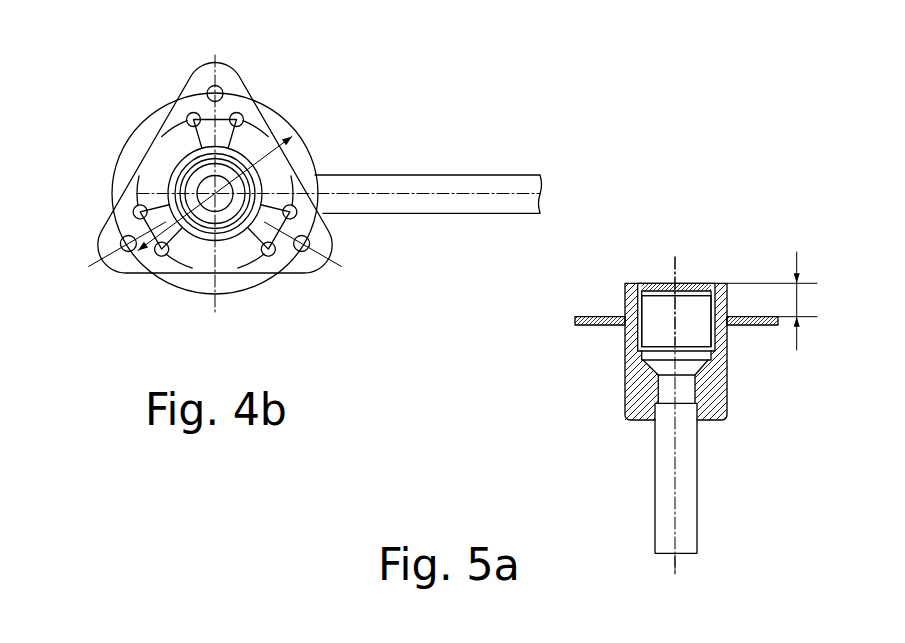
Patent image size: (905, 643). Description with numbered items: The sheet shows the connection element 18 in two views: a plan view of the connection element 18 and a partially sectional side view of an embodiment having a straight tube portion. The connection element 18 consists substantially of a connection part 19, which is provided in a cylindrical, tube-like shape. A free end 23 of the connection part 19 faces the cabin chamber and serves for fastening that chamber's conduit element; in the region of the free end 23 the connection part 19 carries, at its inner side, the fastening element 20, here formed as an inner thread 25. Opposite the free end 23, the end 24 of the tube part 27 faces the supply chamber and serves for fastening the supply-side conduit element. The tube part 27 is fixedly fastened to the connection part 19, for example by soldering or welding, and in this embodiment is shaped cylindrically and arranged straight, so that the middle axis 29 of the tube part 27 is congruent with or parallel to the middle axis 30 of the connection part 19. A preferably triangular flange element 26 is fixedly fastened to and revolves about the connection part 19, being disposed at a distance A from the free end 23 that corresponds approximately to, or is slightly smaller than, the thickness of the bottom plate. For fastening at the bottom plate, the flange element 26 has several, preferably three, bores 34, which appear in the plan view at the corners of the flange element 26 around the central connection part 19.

In FIG. 4B, the connection element 18 is at (352, 113).
In FIG. 5A, the connection element 18 is at (585, 436).
In FIG. 5A, the connection part 19 is at (637, 387).
In FIG. 5A, the fastening element 20 is at (648, 312).
In FIG. 5A, the free end 23 is at (669, 258).
In FIG. 5A, the end 24 is at (679, 580).
In FIG. 5A, the inner thread 25 is at (703, 317).
In FIG. 4B, the flange element 26 is at (162, 158).
In FIG. 5A, the flange element 26 is at (583, 317).
In FIG. 4B, the tube part 27 is at (473, 203).
In FIG. 5A, the tube part 27 is at (687, 502).
In FIG. 5A, the middle axis 29 is at (677, 447).
In FIG. 5A, the middle axis 30 is at (675, 335).
In FIG. 4B, the bores 34 is at (213, 92).